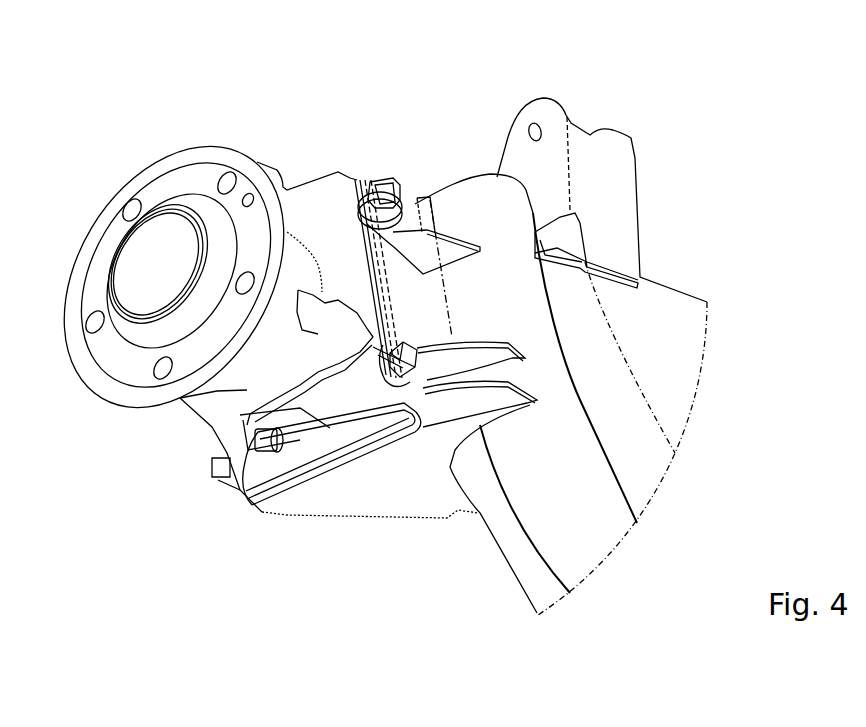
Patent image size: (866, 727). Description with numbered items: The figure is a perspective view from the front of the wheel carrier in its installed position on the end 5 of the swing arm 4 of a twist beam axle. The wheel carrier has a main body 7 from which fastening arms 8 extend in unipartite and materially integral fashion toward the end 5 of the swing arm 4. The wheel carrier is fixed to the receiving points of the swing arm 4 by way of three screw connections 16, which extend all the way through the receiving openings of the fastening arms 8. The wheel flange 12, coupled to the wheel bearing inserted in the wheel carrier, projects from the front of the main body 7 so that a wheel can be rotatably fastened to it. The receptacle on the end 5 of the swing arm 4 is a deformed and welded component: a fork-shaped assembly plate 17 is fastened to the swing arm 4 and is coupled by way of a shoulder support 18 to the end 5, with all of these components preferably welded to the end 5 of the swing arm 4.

The swing arm 4 is at (570, 530).
The end of the swing arm 5 is at (471, 178).
The main body 7 is at (320, 212).
The fastening arm 8 is at (242, 455).
The wheel flange 12 is at (172, 188).
The screw connection 16 is at (396, 193).
The fork-shaped assembly plate 17 is at (400, 418).
The shoulder support 18 is at (408, 502).